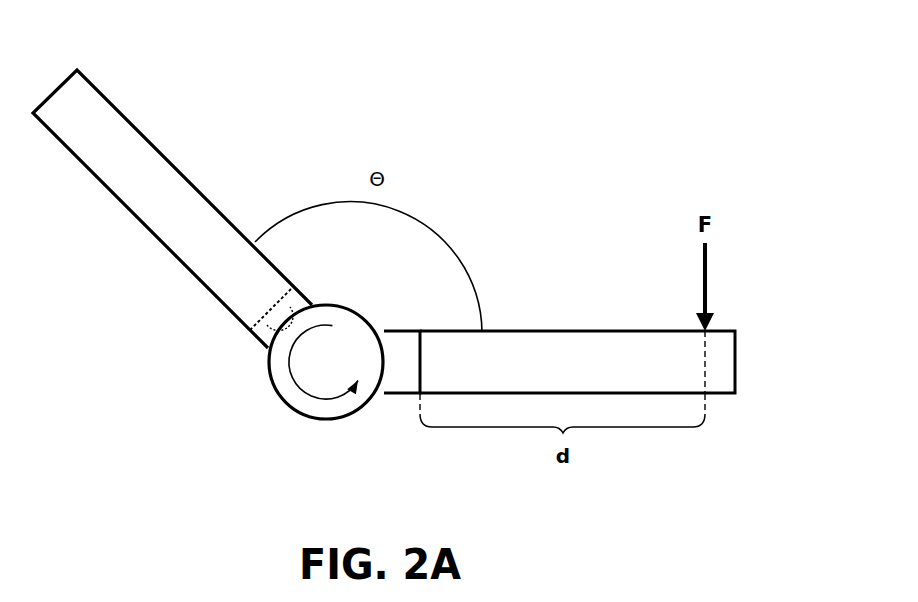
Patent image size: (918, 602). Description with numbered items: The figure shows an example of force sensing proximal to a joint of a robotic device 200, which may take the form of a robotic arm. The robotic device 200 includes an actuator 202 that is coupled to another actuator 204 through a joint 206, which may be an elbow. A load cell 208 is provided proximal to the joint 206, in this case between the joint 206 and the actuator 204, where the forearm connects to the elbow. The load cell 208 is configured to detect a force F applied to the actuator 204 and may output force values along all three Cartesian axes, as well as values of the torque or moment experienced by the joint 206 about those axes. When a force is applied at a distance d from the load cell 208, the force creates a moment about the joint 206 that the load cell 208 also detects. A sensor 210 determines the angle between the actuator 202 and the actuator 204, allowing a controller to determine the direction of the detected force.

The robotic device 200 is at (142, 52).
The actuator 202 is at (140, 221).
The actuator 204 is at (735, 367).
The joint 206 is at (273, 392).
The load cell 208 is at (400, 394).
The sensor 210 is at (250, 331).